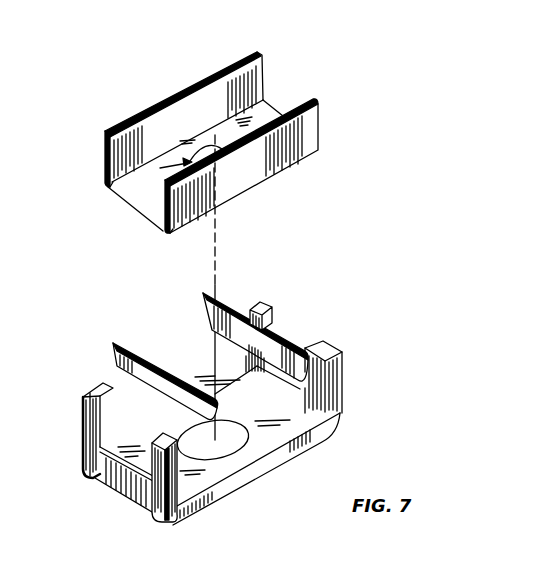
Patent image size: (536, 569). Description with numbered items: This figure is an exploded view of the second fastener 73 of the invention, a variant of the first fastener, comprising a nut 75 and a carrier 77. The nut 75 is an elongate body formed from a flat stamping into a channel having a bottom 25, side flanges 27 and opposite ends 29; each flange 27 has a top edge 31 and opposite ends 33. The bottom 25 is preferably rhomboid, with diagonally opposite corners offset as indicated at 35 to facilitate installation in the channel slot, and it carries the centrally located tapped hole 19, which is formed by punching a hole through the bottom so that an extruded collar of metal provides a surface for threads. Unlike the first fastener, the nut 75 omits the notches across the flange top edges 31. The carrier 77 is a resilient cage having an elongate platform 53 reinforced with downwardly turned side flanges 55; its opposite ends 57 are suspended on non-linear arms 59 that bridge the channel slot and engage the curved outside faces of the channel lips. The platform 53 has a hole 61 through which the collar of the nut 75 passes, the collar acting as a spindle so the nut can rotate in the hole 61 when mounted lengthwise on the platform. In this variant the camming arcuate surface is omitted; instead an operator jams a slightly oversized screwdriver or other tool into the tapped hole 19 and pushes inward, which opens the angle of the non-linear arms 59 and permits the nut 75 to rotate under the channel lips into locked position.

The tapped hole 19 is at (143, 182).
The bottom 25 is at (264, 110).
The side flanges 27 is at (140, 137).
The opposite ends 29 is at (135, 218).
The top edge 31 is at (194, 90).
The opposite ends 33 is at (105, 157).
The offset corners 35 is at (108, 187).
The platform 53 is at (300, 389).
The side flanges 55 is at (232, 488).
The opposite ends 57 is at (320, 408).
The non-linear arms 59 is at (100, 397).
The hole 61 is at (248, 443).
The fastener 73 is at (343, 254).
The nut 75 is at (264, 33).
The carrier 77 is at (203, 373).